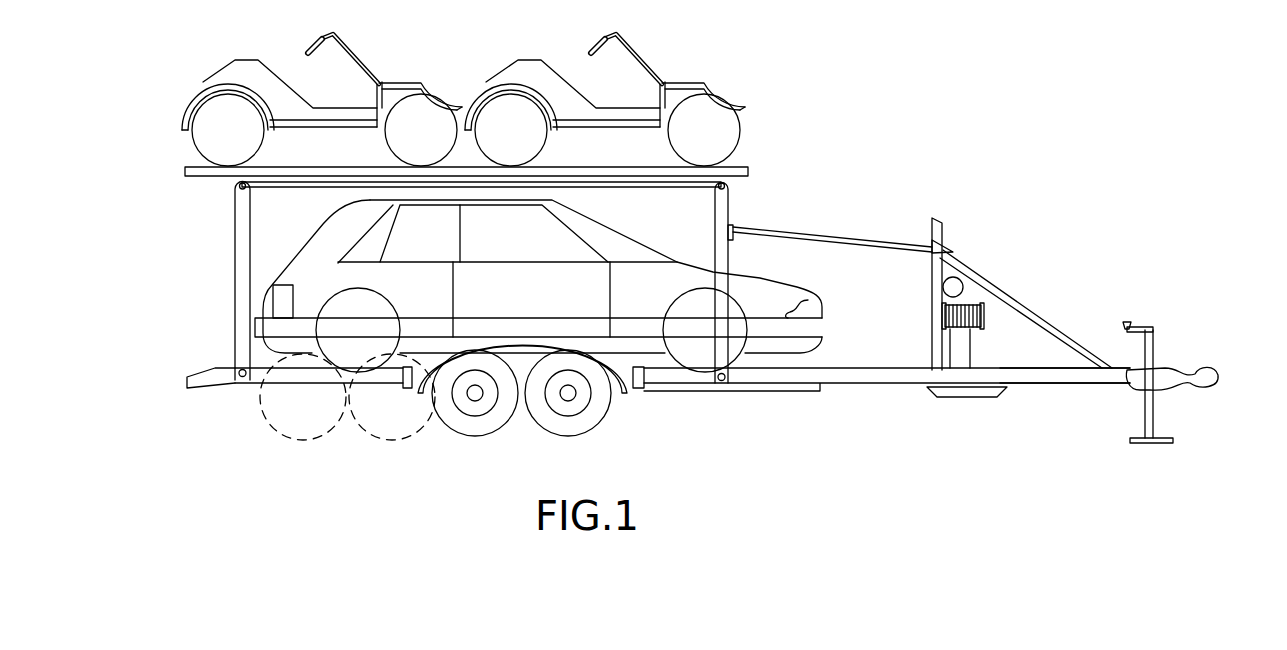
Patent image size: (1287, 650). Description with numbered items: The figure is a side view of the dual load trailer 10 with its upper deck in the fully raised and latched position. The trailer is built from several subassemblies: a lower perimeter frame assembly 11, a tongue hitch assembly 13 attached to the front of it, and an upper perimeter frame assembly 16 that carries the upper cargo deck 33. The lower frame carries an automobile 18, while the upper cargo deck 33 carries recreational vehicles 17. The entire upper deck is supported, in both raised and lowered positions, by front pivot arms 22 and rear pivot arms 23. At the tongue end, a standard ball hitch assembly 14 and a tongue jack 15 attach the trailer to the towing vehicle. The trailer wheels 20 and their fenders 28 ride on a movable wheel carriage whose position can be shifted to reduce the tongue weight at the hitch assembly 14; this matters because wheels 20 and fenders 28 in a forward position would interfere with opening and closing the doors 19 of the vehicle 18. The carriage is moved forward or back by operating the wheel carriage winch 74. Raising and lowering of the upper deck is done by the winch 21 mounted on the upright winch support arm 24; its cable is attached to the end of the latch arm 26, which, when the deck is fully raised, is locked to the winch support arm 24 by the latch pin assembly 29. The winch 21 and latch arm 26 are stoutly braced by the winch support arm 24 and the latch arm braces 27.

The dual load trailer 10 is at (682, 405).
The lower perimeter frame assembly 11 is at (220, 368).
The tongue hitch assembly 13 is at (1080, 377).
The ball hitch assembly 14 is at (1213, 368).
The tongue jack 15 is at (1153, 338).
The upper perimeter frame assembly 16 is at (333, 190).
The recreational vehicles 17 is at (415, 82).
The automobile 18 is at (597, 240).
The doors 19 is at (460, 293).
The trailer wheels 20 is at (555, 430).
The winch 21 is at (958, 283).
The front pivot arms 22 is at (714, 208).
The rear pivot arms 23 is at (250, 255).
The winch support arm 24 is at (932, 305).
The latch arm 26 is at (790, 228).
The latch arm braces 27 is at (1010, 303).
The fenders 28 is at (518, 337).
The latch pin assembly 29 is at (943, 242).
The upper cargo deck 33 is at (750, 167).
The wheel carriage winch 74 is at (973, 337).